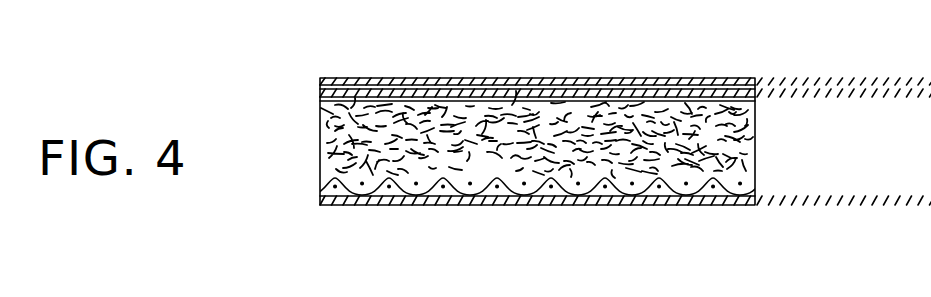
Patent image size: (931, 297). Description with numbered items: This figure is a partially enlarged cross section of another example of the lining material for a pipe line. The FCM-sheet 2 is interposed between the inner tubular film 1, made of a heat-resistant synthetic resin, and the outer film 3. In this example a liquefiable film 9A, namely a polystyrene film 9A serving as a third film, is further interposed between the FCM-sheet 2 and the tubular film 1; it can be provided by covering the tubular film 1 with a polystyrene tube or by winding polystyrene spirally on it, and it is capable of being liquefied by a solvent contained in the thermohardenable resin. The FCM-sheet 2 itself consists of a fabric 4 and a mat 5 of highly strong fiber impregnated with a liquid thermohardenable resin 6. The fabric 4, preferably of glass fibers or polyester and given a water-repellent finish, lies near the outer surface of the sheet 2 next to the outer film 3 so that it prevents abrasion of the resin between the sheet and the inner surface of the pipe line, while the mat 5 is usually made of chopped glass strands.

The inner tubular film 1 is at (427, 78).
The liquefiable film 9A is at (363, 96).
The liquid thermohardenable resin 6 is at (677, 105).
The FCM-sheet 2 is at (283, 105).
The mat 5 is at (605, 127).
The fabric 4 is at (750, 178).
The outer film 3 is at (435, 206).